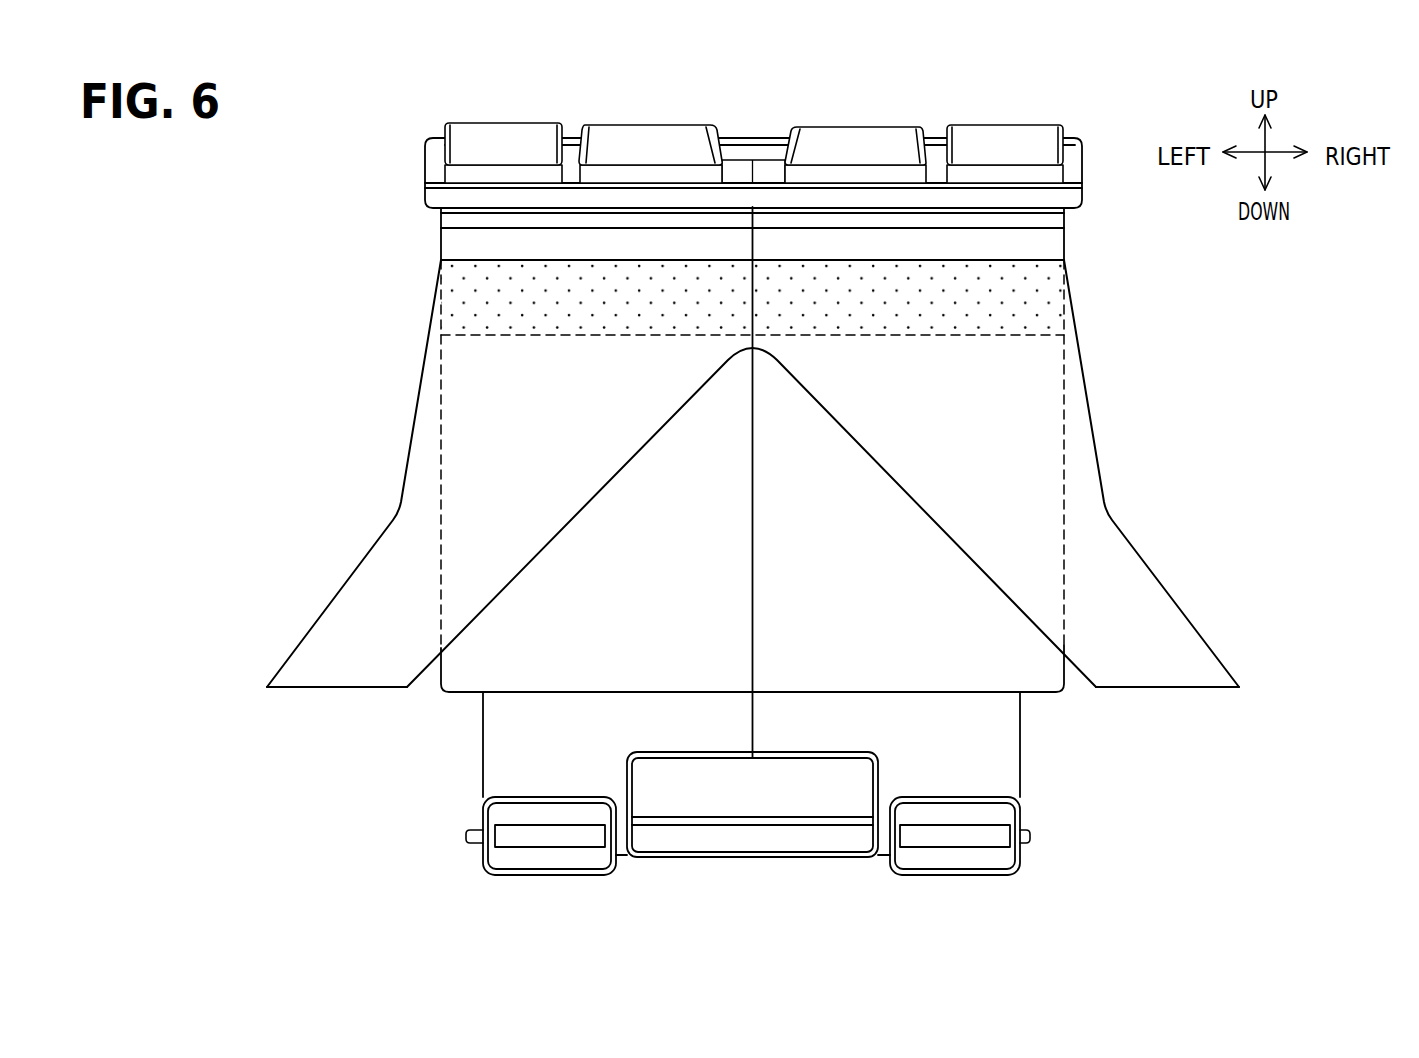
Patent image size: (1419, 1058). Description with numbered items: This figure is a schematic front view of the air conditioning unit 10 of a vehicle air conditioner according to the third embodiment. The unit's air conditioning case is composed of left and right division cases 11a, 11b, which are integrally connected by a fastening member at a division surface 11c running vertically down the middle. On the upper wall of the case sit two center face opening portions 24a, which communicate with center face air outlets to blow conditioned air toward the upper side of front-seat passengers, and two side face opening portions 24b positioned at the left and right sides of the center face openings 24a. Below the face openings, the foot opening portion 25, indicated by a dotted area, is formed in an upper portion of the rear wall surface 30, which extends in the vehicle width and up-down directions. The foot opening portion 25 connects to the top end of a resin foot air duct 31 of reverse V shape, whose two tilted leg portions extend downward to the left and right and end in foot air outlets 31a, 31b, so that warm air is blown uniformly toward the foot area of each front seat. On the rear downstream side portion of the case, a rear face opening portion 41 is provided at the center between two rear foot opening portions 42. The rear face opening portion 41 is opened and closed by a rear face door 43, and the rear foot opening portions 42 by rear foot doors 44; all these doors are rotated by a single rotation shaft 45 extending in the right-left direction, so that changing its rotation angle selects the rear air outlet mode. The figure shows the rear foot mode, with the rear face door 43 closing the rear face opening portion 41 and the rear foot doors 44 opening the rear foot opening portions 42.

The air conditioning unit 10 is at (753, 126).
The center face opening portion 24a is at (851, 134).
The side face opening portion 24b is at (1003, 134).
The foot opening portion 25 is at (488, 286).
The rear wall surface 30 is at (533, 598).
The foot air duct 31 is at (753, 503).
The foot air outlet 31a is at (313, 688).
The foot air outlet 31b is at (1188, 688).
The left division case 11a is at (473, 693).
The right division case 11b is at (1040, 695).
The division surface 11c is at (750, 490).
The rear face opening portion 41 is at (776, 753).
The rear foot opening portion 42 is at (977, 878).
The rear face door 43 is at (777, 804).
The rear foot door 44 is at (934, 838).
The rotation shaft 45 is at (475, 840).